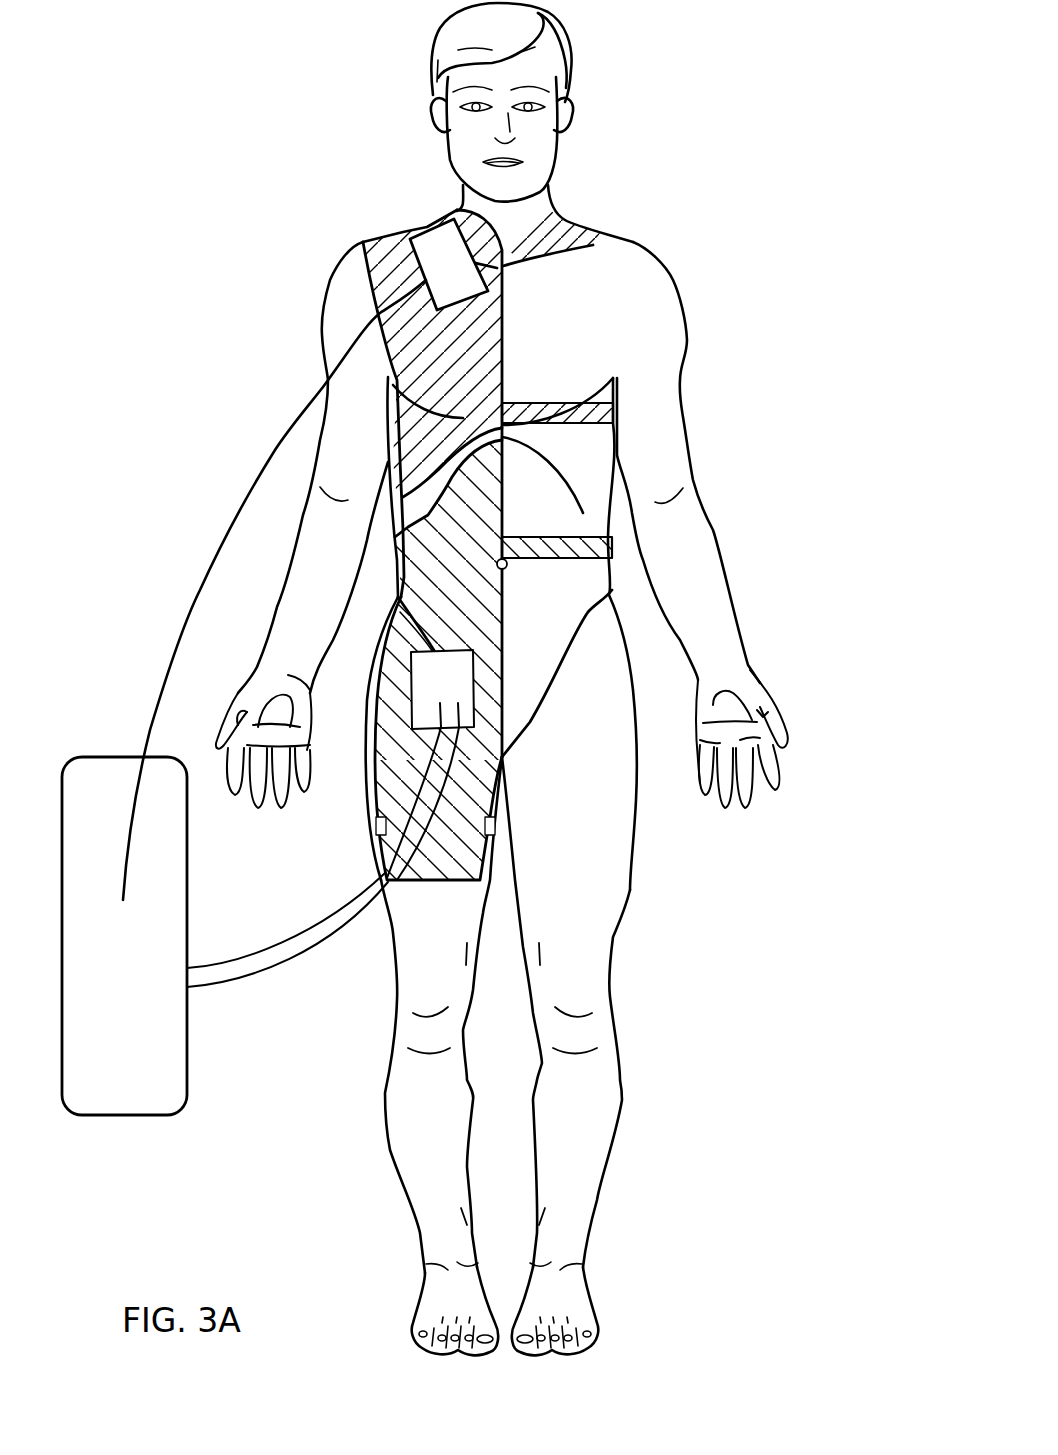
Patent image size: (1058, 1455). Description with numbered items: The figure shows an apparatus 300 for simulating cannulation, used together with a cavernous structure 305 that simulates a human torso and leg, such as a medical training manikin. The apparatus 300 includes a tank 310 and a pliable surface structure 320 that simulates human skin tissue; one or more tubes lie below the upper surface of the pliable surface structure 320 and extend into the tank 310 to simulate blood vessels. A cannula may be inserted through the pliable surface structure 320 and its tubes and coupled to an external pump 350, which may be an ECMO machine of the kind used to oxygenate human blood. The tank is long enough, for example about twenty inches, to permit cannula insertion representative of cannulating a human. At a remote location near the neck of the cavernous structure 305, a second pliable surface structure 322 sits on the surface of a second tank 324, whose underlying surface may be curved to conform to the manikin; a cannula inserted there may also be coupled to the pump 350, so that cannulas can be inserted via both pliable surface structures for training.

The apparatus for simulating cannulation 300 is at (832, 131).
The cavernous structure 305 is at (643, 242).
The tank 310 is at (417, 770).
The pliable surface structure 320 is at (455, 702).
The second pliable surface structure 322 is at (453, 222).
The second tank 324 is at (377, 273).
The external pump 350 is at (88, 768).